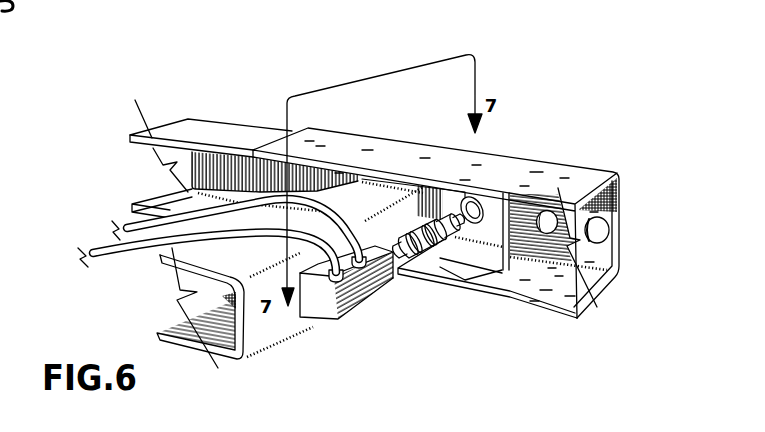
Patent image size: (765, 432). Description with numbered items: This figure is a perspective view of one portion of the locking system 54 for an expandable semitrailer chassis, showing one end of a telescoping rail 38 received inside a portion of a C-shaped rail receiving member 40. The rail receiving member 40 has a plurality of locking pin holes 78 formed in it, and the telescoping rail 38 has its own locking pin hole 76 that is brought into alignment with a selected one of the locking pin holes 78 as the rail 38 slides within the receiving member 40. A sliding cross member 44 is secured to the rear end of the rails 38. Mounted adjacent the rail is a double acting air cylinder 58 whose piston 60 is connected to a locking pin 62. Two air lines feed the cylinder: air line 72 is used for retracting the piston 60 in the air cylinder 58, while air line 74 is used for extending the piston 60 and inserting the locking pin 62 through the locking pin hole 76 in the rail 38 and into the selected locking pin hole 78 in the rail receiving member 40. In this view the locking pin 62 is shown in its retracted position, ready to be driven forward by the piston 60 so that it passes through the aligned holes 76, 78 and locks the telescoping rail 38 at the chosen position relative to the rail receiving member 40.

The telescoping rail 38 is at (217, 133).
The rail receiving member 40 is at (487, 160).
The sliding cross member 44 is at (162, 259).
The locking system 54 is at (340, 330).
The double acting air cylinder 58 is at (362, 291).
The piston 60 is at (418, 273).
The locking pin 62 is at (450, 233).
The air line 72 is at (186, 222).
The air line 74 is at (122, 246).
The locking pin hole 76 is at (485, 222).
The locking pin hole 78 is at (548, 210).